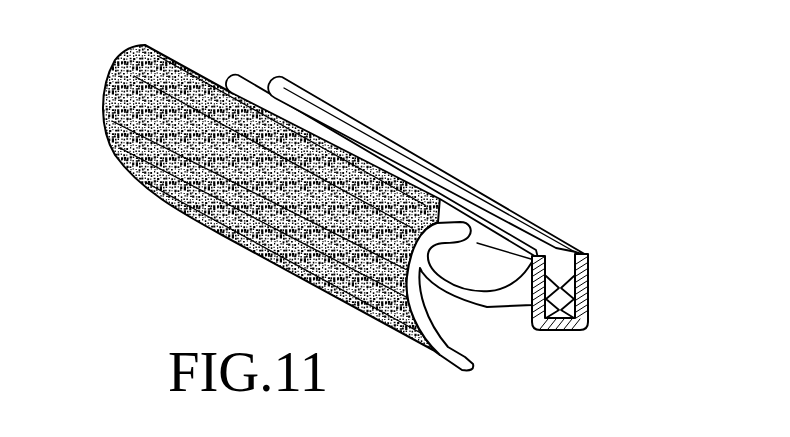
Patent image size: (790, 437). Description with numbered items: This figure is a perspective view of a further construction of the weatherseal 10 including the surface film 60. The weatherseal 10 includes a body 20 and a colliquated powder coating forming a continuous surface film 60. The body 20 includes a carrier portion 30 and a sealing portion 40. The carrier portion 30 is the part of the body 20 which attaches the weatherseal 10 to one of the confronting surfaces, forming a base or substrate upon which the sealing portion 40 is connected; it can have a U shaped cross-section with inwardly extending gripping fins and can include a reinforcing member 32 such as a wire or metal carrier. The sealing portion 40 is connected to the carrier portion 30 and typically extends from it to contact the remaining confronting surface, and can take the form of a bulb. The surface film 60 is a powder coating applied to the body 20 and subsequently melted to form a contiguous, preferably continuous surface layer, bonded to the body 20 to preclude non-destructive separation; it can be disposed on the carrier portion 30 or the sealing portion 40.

The weatherseal 10 is at (335, 206).
The body 20 is at (558, 231).
The carrier portion 30 is at (584, 327).
The reinforcing member 32 is at (589, 285).
The sealing portion 40 is at (470, 354).
The surface film 60 is at (104, 125).